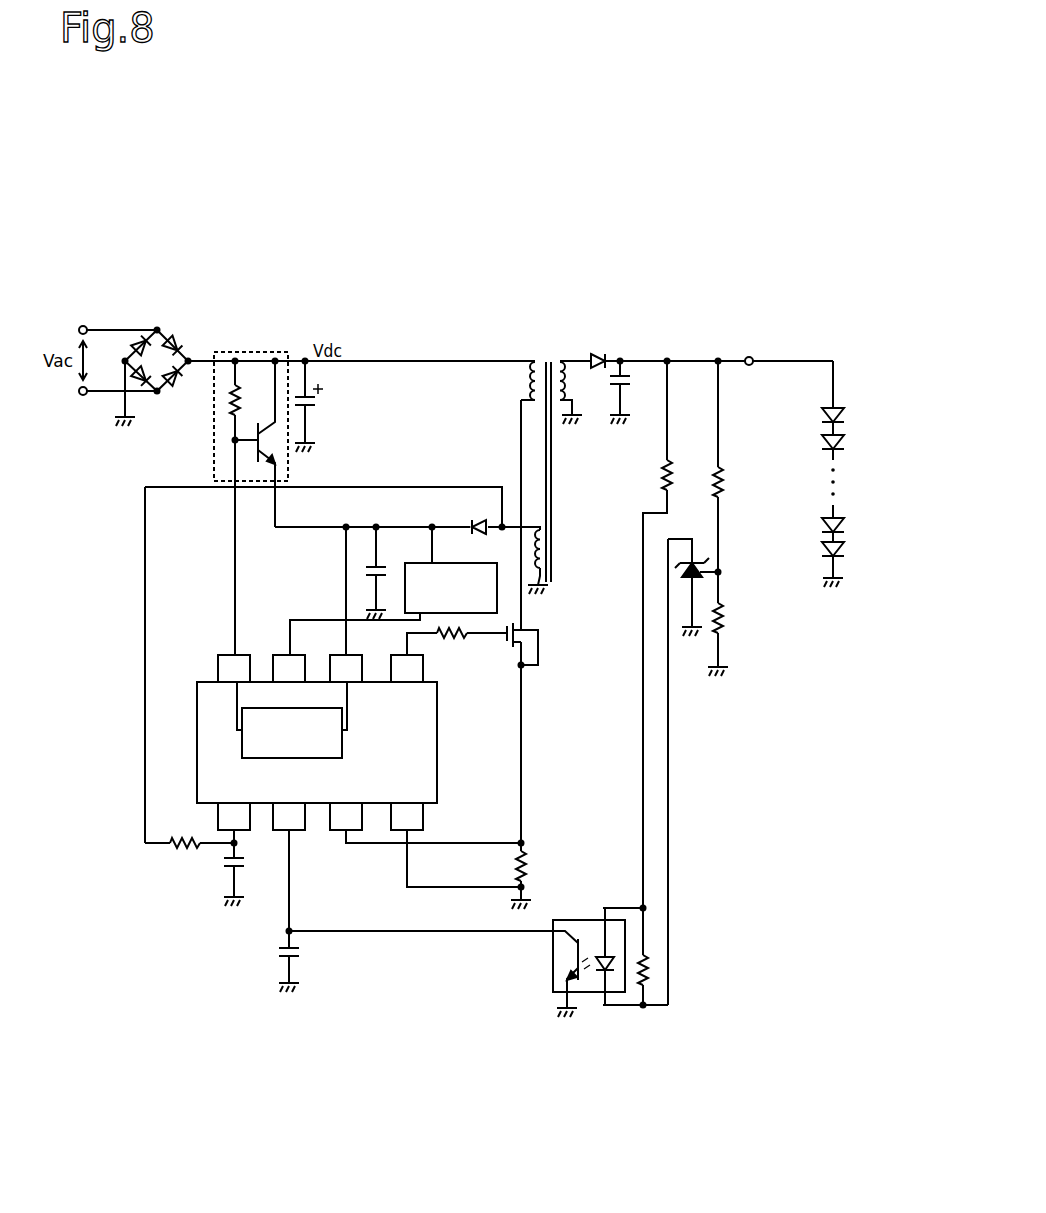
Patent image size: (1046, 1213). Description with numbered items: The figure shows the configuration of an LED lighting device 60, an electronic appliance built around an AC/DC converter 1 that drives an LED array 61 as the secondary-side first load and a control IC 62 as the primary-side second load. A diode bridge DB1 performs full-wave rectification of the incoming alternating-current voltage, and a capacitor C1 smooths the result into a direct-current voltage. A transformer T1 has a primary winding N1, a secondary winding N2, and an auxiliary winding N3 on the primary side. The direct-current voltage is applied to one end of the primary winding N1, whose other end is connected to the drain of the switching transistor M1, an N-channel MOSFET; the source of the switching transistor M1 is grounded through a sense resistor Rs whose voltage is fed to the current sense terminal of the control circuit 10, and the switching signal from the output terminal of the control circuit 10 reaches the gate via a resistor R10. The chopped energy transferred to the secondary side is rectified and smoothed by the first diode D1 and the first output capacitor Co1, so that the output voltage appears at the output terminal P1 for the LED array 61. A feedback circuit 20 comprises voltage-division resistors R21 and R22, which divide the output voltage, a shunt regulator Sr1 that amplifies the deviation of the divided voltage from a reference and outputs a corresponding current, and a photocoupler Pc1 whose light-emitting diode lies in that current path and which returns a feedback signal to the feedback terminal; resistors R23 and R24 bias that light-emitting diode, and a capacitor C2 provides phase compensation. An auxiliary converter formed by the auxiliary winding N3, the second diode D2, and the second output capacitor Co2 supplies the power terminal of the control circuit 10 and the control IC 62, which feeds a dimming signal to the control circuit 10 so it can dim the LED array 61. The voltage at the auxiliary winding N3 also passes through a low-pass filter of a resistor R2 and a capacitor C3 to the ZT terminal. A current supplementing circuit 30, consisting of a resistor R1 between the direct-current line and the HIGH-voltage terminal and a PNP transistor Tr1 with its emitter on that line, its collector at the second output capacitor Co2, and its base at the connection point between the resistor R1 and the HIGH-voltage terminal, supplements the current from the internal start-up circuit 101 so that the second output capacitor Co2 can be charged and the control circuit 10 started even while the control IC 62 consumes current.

The LED lighting device 60 is at (526, 190).
The AC/DC converter 1 is at (694, 317).
The diode bridge DB1 is at (186, 338).
The resistor R1 is at (222, 405).
The capacitor C1 is at (318, 405).
The current supplementing circuit 30 is at (248, 503).
The PNP transistor Tr1 is at (275, 445).
The transformer T1 is at (551, 448).
The primary winding N1 is at (536, 357).
The secondary winding N2 is at (558, 357).
The auxiliary winding N3 is at (538, 579).
The first diode D1 is at (599, 353).
The first output capacitor Co1 is at (626, 384).
The output terminal P1 is at (749, 357).
The LED array 61 is at (842, 398).
The second diode D2 is at (474, 520).
The second output capacitor Co2 is at (389, 568).
The control IC 62 is at (500, 571).
The switching transistor M1 is at (530, 629).
The resistor R10 is at (451, 639).
The control circuit 10 is at (342, 742).
The start-up circuit 101 is at (349, 753).
The resistor R2 is at (180, 837).
The capacitor C3 is at (221, 864).
The sense resistor Rs is at (528, 866).
The capacitor C2 is at (276, 953).
The resistor R23 is at (662, 478).
The voltage-division resistor R21 is at (727, 479).
The voltage-division resistor R22 is at (727, 606).
The shunt regulator Sr1 is at (697, 554).
The photocoupler Pc1 is at (559, 920).
The resistor R24 is at (664, 957).
The feedback circuit 20 is at (648, 974).